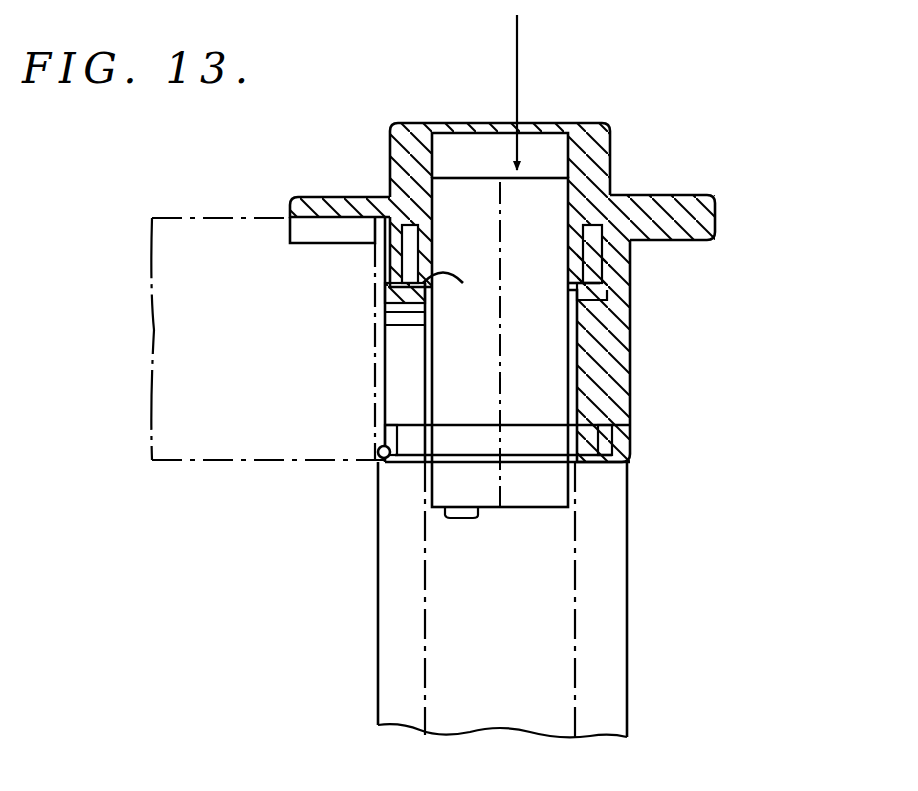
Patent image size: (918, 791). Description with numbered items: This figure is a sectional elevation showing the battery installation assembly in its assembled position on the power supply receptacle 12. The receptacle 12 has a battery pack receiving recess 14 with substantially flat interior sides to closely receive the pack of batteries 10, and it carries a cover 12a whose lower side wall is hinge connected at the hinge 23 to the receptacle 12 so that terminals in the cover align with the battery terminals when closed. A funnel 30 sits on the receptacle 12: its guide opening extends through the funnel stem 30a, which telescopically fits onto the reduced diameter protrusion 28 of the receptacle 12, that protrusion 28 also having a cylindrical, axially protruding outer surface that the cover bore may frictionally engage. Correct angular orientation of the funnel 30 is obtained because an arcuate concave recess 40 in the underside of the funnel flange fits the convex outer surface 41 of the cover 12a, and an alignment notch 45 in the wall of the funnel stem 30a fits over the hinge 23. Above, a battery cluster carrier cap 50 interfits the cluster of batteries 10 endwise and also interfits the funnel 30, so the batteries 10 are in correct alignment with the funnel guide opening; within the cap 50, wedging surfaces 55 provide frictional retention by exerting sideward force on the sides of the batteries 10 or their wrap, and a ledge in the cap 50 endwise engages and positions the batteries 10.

The batteries 10 is at (545, 510).
The power supply receptacle 12 is at (630, 630).
The cover 12a is at (170, 462).
The battery pack receiving recess 14 is at (425, 658).
The hinge 23 is at (385, 447).
The protrusion 28 is at (595, 432).
The funnel 30 is at (683, 188).
The funnel stem 30a is at (625, 340).
The arcuate concave recess 40 is at (330, 213).
The convex outer surface 41 is at (275, 287).
The alignment notch 45 is at (392, 372).
The battery cluster carrier cap 50 is at (607, 122).
The wedging surfaces 55 is at (468, 286).